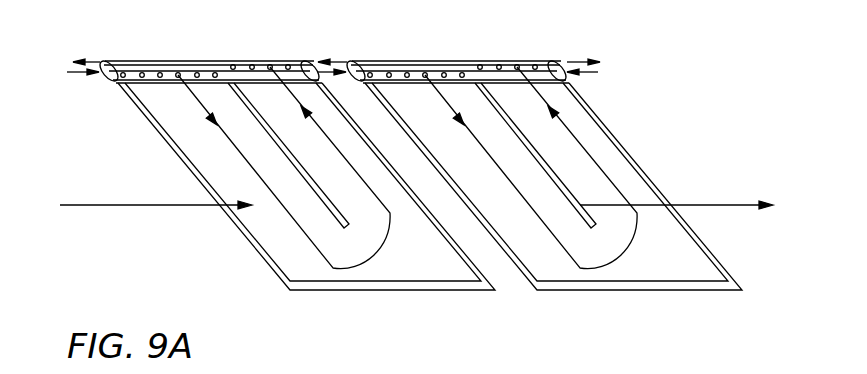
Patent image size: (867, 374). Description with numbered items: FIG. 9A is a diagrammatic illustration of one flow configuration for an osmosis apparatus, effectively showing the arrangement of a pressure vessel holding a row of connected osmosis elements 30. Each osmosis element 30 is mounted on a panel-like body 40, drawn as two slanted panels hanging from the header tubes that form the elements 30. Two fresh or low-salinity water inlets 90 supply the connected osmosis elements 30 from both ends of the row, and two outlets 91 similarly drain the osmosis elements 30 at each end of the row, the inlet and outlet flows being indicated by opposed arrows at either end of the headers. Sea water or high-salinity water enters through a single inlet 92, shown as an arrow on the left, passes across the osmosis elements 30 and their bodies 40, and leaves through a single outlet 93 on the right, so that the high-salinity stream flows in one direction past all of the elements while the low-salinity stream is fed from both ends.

The osmosis element 30 is at (263, 61).
The heat exchange panel 40 is at (398, 291).
The fresh or low-salinity water inlet 90 is at (76, 76).
The outlet 91 is at (95, 60).
The sea water or high-salinity water inlet 92 is at (117, 207).
The outlet 93 is at (742, 207).